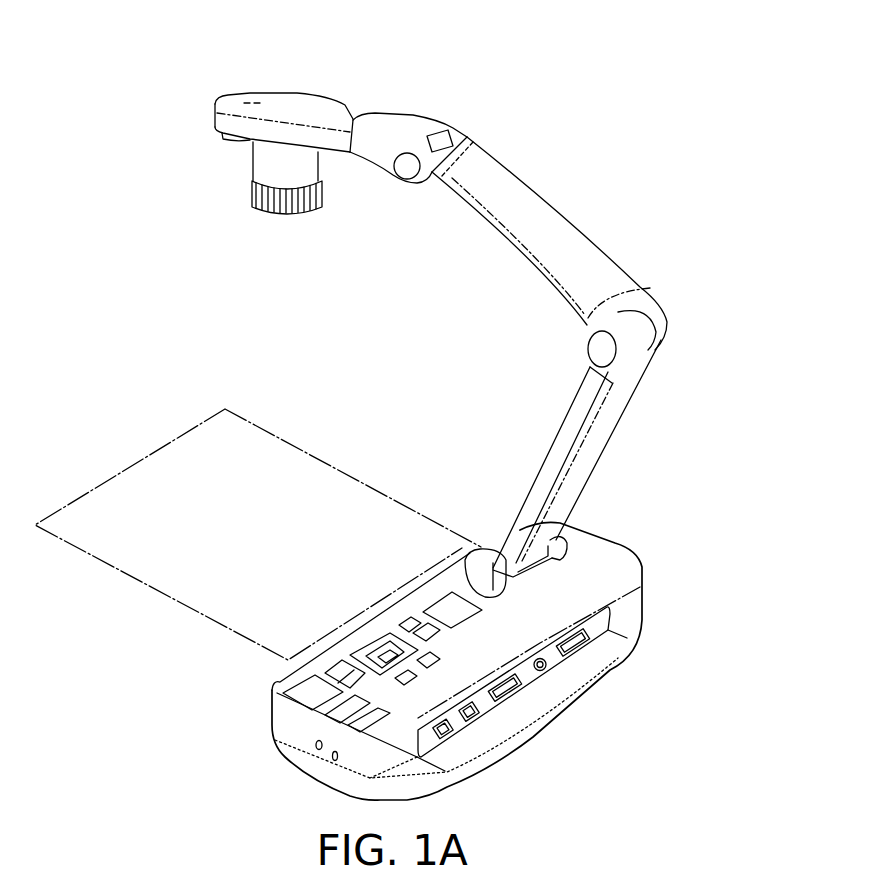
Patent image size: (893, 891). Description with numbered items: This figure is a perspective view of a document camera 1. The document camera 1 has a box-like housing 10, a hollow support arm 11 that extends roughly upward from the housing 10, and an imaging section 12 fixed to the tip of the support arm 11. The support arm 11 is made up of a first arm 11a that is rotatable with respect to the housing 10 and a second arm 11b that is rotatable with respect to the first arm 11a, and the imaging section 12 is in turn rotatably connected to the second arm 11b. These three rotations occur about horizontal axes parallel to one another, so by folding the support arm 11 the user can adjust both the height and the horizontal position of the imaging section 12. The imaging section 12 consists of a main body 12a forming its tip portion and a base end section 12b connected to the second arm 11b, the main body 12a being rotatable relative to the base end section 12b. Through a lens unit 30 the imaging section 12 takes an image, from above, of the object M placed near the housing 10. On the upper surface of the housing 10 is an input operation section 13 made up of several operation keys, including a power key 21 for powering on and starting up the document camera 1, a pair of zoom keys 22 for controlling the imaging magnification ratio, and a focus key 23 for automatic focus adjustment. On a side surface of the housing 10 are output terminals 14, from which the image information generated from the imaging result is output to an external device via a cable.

The document camera 1 is at (600, 54).
The housing 10 is at (605, 553).
The support arm 11 is at (747, 273).
The first arm 11a is at (625, 388).
The second arm 11b is at (605, 266).
The imaging section 12 is at (471, 68).
The main body 12a is at (334, 110).
The base end section 12b is at (410, 124).
The input operation section 13 is at (310, 722).
The output terminals 14 is at (553, 673).
The power key 21 is at (467, 610).
The zoom keys 22 is at (340, 667).
The focus key 23 is at (307, 690).
The lens unit 30 is at (262, 172).
The object M is at (270, 456).